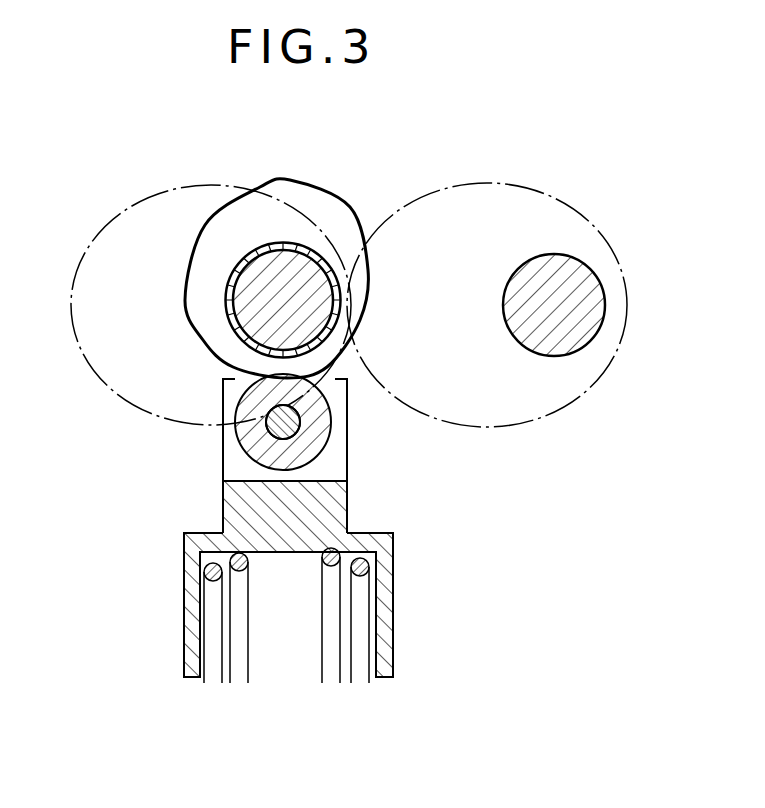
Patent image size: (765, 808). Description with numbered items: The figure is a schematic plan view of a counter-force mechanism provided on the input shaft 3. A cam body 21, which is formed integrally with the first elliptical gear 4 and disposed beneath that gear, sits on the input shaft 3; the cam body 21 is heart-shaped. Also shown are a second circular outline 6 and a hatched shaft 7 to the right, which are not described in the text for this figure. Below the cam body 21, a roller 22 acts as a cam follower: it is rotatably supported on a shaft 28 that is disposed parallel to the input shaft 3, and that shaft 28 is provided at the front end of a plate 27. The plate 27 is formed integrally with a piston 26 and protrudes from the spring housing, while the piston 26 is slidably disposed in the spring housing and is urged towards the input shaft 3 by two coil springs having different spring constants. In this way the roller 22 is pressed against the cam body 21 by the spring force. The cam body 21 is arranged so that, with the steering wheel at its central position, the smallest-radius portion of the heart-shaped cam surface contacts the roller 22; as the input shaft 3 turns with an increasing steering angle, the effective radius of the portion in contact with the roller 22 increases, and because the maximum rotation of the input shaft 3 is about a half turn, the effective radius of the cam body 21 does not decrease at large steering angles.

The input shaft 3 is at (305, 273).
The first elliptical gear 4 is at (138, 208).
The rotation locus circle 6 is at (438, 192).
The shaft 7 is at (587, 291).
The cam body 21 is at (272, 181).
The roller 22 is at (313, 450).
The piston 26 is at (393, 600).
The plate 27 is at (338, 505).
The shaft 28 is at (302, 420).